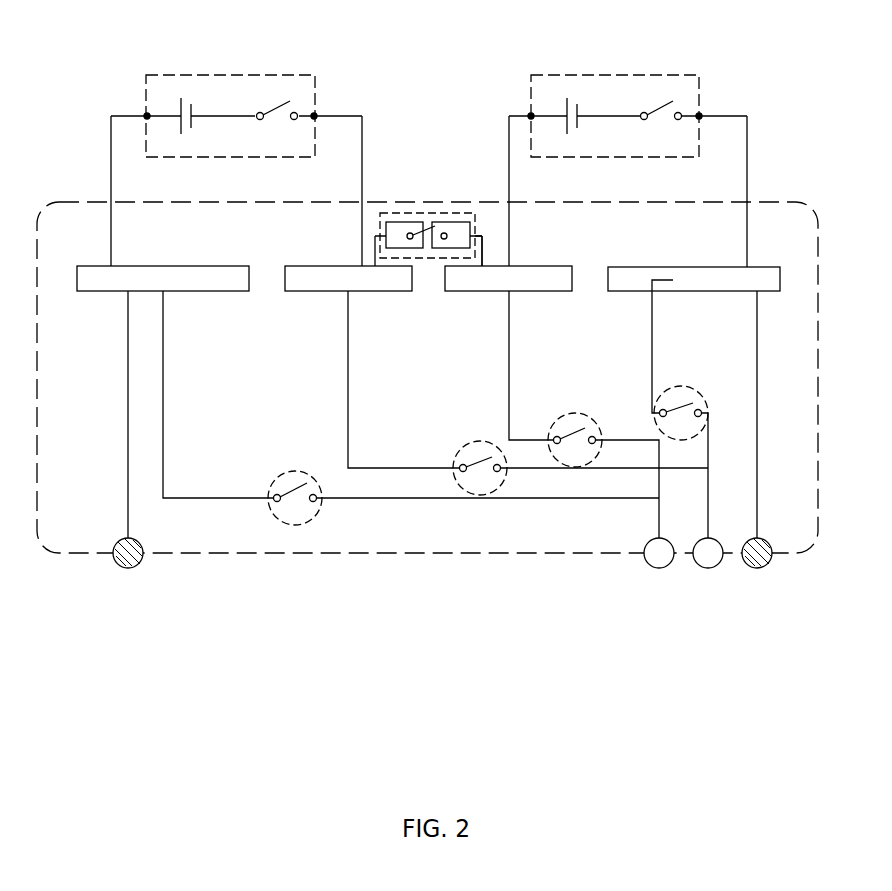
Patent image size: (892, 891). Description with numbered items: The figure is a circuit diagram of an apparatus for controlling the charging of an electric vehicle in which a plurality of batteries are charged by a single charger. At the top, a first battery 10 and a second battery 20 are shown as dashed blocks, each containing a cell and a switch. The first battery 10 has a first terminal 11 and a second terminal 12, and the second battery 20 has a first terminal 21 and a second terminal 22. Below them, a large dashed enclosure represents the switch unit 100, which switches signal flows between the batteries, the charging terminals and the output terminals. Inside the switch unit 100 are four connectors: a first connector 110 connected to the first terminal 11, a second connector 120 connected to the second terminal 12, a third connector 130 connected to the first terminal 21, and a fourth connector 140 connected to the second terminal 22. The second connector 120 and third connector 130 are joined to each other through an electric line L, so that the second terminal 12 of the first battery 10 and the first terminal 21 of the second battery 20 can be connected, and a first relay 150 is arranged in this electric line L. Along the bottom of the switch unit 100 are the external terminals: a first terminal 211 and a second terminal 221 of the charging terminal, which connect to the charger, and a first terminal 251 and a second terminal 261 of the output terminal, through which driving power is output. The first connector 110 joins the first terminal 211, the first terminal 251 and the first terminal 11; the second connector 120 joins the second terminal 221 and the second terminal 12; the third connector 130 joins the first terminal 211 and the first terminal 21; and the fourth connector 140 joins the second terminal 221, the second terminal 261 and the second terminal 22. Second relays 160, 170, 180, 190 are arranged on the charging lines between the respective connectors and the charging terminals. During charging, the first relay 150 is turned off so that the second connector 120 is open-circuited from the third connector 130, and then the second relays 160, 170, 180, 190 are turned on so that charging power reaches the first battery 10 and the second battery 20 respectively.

The first battery 10 is at (275, 75).
The first terminal of the first battery 11 is at (147, 116).
The second terminal of the first battery 12 is at (314, 116).
The second battery 20 is at (658, 75).
The first terminal of the second battery 21 is at (531, 116).
The second terminal of the second battery 22 is at (699, 116).
The switch unit 100 is at (812, 210).
The first connector 110 is at (215, 292).
The second connector 120 is at (380, 292).
The third connector 130 is at (470, 292).
The fourth connector 140 is at (623, 292).
The first relay 150 is at (428, 213).
The electric line L is at (476, 233).
The second relay 160 is at (296, 471).
The second relay 170 is at (480, 441).
The second relay 180 is at (575, 413).
The second relay 190 is at (681, 386).
The first terminal of the charging terminal 211 is at (659, 568).
The second terminal of the charging terminal 221 is at (708, 568).
The first terminal of the output terminal 251 is at (128, 568).
The second terminal of the output terminal 261 is at (757, 568).